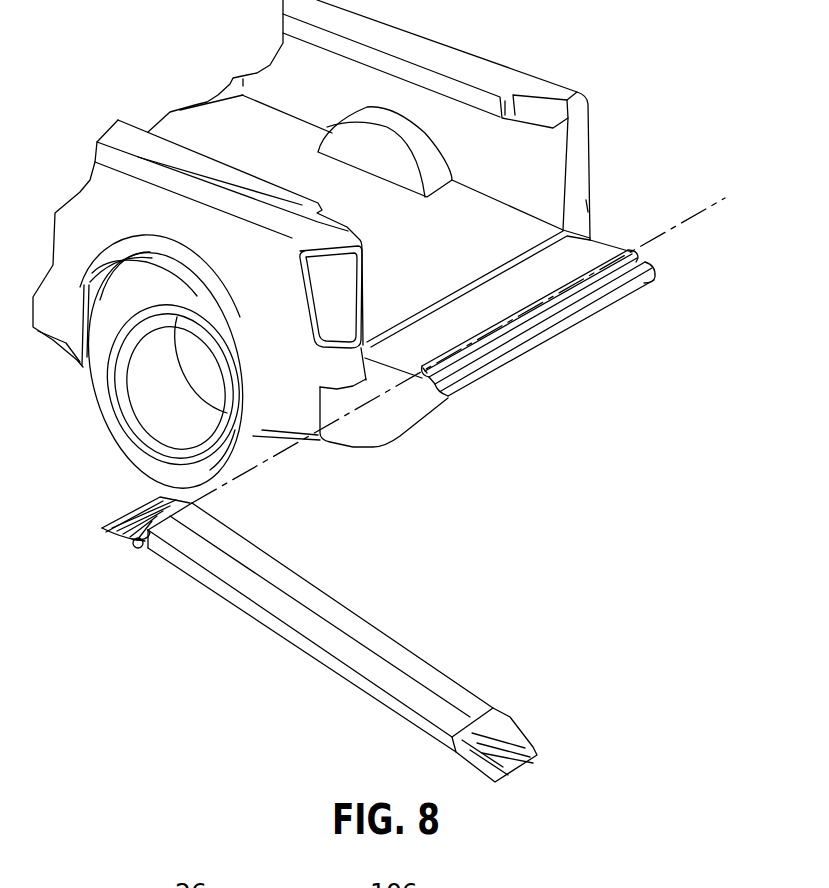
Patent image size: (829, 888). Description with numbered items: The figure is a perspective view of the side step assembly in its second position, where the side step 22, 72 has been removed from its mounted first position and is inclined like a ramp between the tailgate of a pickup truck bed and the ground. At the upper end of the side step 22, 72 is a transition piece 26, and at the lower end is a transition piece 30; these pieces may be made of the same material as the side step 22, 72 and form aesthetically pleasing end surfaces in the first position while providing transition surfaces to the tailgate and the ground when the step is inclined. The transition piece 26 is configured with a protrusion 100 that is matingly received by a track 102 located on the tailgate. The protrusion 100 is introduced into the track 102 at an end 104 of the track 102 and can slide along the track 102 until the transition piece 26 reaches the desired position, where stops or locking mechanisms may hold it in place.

The side step 22 is at (326, 627).
The side step 72 is at (355, 624).
The transition piece 26 is at (140, 515).
The transition piece 30 is at (523, 733).
The protrusion 100 is at (132, 553).
The track 102 is at (582, 288).
The end of the track 104 is at (426, 374).